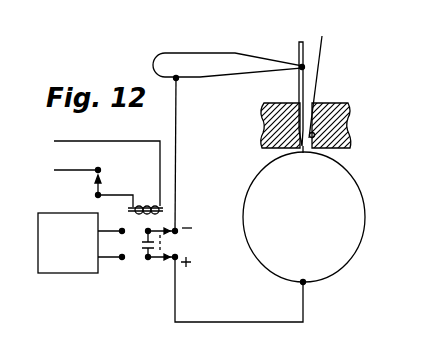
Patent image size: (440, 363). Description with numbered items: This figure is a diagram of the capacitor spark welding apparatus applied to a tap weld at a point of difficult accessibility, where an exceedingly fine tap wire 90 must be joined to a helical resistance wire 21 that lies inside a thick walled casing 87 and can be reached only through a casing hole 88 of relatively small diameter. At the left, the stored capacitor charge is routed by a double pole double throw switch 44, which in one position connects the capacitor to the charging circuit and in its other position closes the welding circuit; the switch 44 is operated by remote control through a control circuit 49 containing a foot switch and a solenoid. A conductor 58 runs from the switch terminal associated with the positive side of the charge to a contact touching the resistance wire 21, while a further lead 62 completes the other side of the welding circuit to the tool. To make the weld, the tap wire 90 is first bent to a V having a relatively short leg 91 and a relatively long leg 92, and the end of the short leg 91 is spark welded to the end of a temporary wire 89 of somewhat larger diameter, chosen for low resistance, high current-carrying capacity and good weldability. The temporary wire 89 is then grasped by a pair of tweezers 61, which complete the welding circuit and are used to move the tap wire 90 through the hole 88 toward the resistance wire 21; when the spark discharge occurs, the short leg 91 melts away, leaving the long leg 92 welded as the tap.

The helical resistance wire 21 is at (352, 175).
The double pole double throw switch 44 is at (159, 274).
The control circuit 49 is at (116, 141).
The conductor 58 is at (255, 322).
The tweezers 61 is at (222, 54).
The conductor 62 is at (176, 122).
The thick walled casing 87 is at (345, 104).
The casing hole 88 is at (315, 135).
The temporary wire 89 is at (299, 46).
The tap wire 90 is at (329, 42).
The short leg 91 is at (303, 153).
The long leg 92 is at (317, 80).